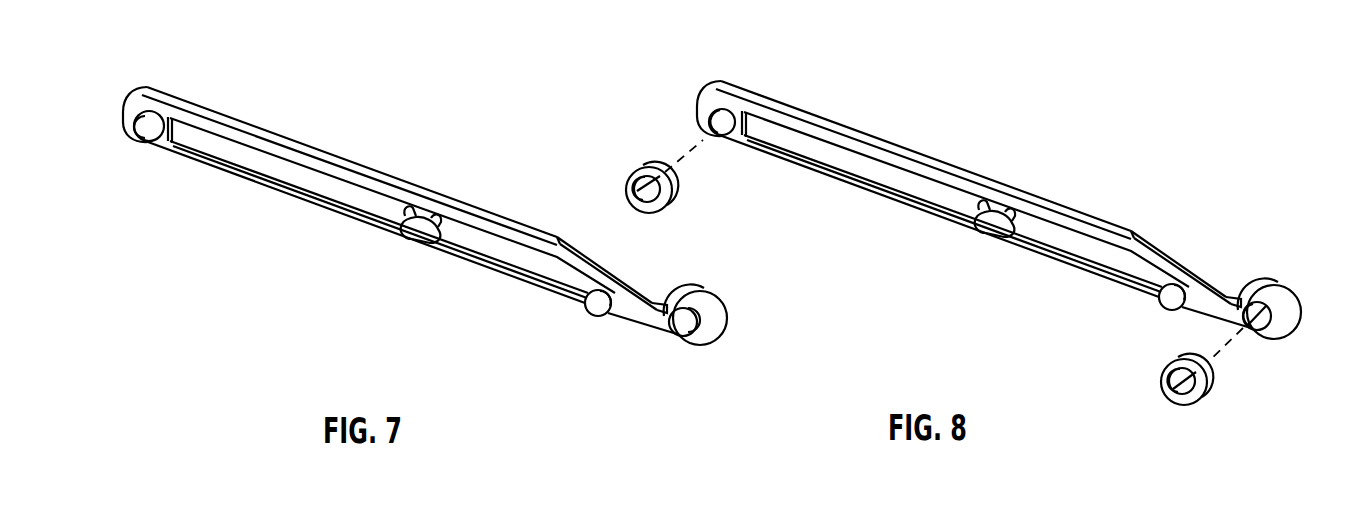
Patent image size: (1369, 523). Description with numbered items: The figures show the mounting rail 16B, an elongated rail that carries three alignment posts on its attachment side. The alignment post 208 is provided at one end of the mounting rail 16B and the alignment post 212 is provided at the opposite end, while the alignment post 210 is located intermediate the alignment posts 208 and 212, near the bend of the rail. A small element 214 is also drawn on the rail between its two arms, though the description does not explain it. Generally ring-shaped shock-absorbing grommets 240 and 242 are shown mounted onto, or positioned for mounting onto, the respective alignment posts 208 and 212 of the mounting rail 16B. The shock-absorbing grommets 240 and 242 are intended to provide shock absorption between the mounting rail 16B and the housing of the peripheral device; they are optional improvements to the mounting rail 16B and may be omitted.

In FIG. 8, the alignment post 208 is at (707, 113).
In FIG. 7, the shock-absorbing grommet 240 is at (137, 117).
In FIG. 8, the shock-absorbing grommet 240 is at (630, 175).
In FIG. 7, the shock-absorbing grommet 242 is at (707, 303).
In FIG. 8, the shock-absorbing grommet 242 is at (1170, 368).
In FIG. 7, the alignment post 210 is at (586, 303).
In FIG. 8, the alignment post 210 is at (1160, 297).
In FIG. 8, the alignment post 212 is at (1264, 314).
In FIG. 7, the retaining clip 214 is at (418, 233).
In FIG. 8, the retaining clip 214 is at (990, 227).
In FIG. 8, the mounting rail 16B is at (983, 132).